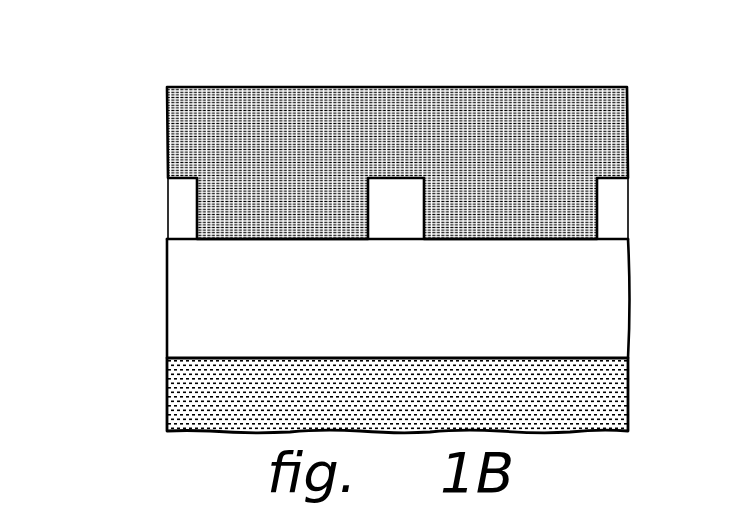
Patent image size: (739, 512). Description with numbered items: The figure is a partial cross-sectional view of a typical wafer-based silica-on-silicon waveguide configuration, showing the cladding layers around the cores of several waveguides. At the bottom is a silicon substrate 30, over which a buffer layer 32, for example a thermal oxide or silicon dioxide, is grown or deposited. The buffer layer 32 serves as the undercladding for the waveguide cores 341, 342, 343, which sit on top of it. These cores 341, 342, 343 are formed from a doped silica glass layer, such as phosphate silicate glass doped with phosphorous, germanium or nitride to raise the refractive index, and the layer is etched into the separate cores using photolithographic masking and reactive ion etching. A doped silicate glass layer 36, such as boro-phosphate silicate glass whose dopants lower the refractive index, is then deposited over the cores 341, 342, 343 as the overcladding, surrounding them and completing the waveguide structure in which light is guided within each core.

The silicon substrate 30 is at (162, 400).
The buffer layer 32 is at (163, 288).
The waveguide core 341 is at (185, 178).
The waveguide core 342 is at (398, 176).
The waveguide core 343 is at (628, 132).
The doped silicate glass layer 36 is at (163, 128).